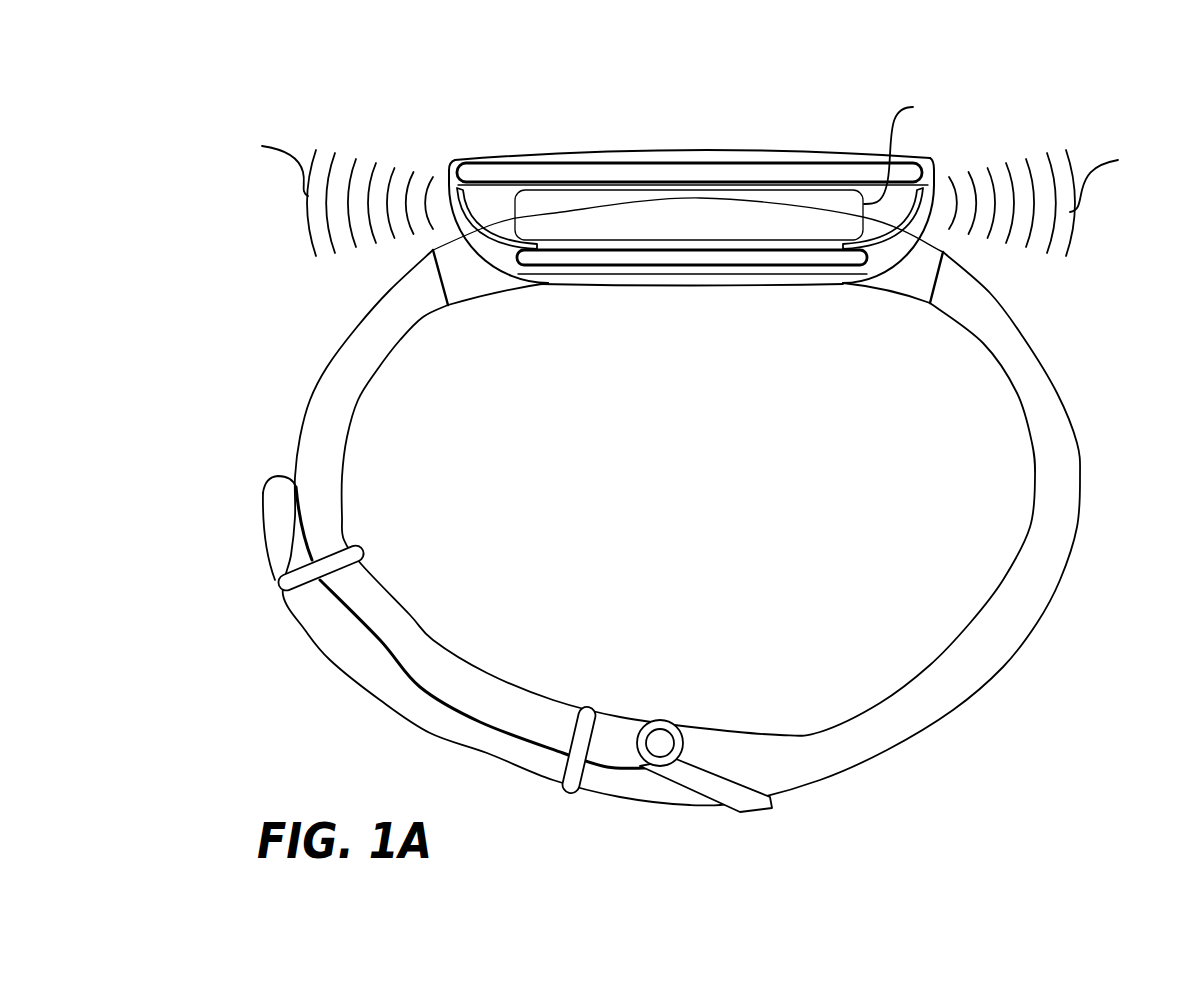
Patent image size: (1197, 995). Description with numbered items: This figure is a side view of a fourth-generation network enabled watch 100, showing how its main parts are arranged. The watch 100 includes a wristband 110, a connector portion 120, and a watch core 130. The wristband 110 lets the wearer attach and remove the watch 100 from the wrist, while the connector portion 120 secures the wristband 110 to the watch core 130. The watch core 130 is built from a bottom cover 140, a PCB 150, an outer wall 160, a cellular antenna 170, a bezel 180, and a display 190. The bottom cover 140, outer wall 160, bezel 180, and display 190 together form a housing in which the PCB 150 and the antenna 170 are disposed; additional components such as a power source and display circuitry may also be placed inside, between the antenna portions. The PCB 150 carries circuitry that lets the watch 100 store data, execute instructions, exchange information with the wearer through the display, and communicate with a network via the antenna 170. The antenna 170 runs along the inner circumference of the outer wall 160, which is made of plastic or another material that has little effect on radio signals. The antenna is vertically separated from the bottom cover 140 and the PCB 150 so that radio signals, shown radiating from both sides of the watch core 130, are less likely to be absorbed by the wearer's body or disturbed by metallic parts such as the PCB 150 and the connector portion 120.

The watch 100 is at (306, 78).
The wristband 110 is at (308, 410).
The connector portion 120 is at (938, 277).
The watch core 130 is at (493, 86).
The bottom cover 140 is at (653, 285).
The PCB 150 is at (756, 263).
The outer wall 160 is at (456, 189).
The 4G antenna 170 is at (926, 189).
The bezel 180 is at (448, 165).
The display 190 is at (499, 163).